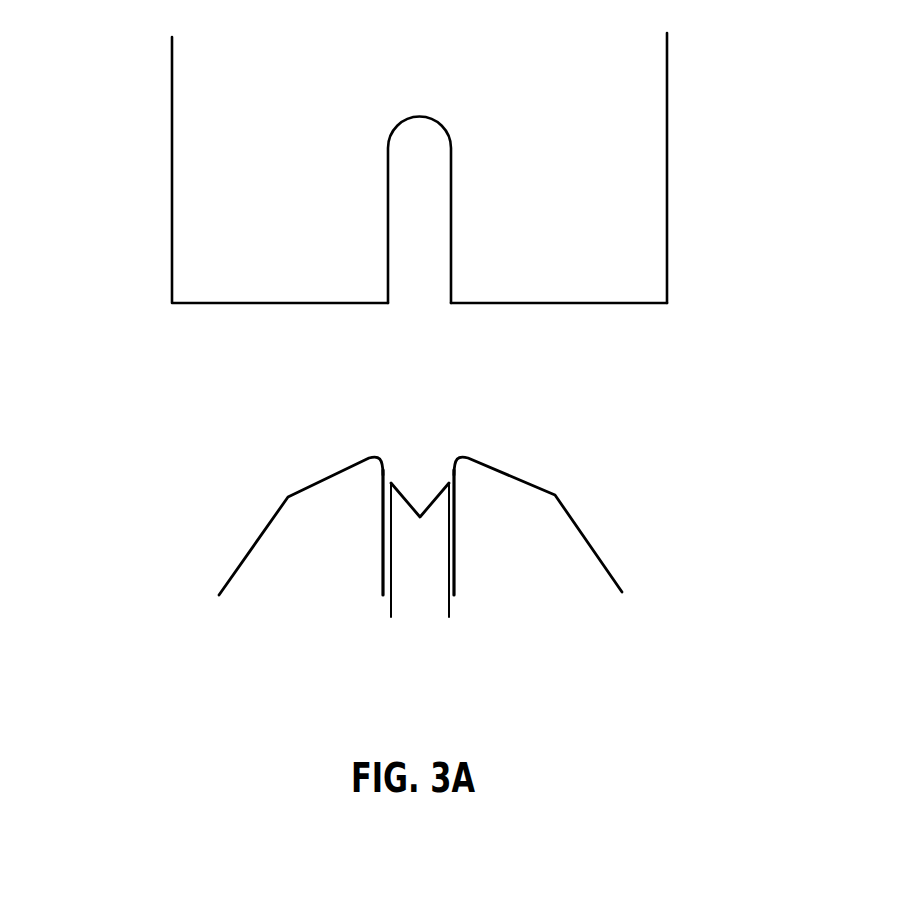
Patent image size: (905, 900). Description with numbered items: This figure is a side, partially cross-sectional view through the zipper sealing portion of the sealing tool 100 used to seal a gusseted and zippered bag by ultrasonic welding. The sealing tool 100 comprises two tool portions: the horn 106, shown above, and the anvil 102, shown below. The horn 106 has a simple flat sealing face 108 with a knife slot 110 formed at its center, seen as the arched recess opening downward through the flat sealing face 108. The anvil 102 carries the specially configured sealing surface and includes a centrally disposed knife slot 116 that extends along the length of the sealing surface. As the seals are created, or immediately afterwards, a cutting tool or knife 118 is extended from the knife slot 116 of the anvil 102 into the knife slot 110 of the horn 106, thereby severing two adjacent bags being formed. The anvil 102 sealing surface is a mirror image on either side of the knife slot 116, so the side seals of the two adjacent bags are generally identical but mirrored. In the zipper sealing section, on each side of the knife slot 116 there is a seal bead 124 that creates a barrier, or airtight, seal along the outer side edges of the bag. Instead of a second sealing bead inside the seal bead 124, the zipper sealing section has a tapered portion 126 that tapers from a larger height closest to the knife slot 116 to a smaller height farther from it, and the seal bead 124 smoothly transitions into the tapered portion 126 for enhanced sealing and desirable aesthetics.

The sealing tool 100 is at (352, 536).
The anvil 102 is at (580, 568).
The horn 106 is at (463, 218).
The flat sealing face 108 is at (609, 302).
The knife slot 110 is at (413, 251).
The knife slot 116 is at (425, 480).
The knife 118 is at (423, 590).
The seal bead 124 is at (378, 457).
The tapered portion 126 is at (325, 478).